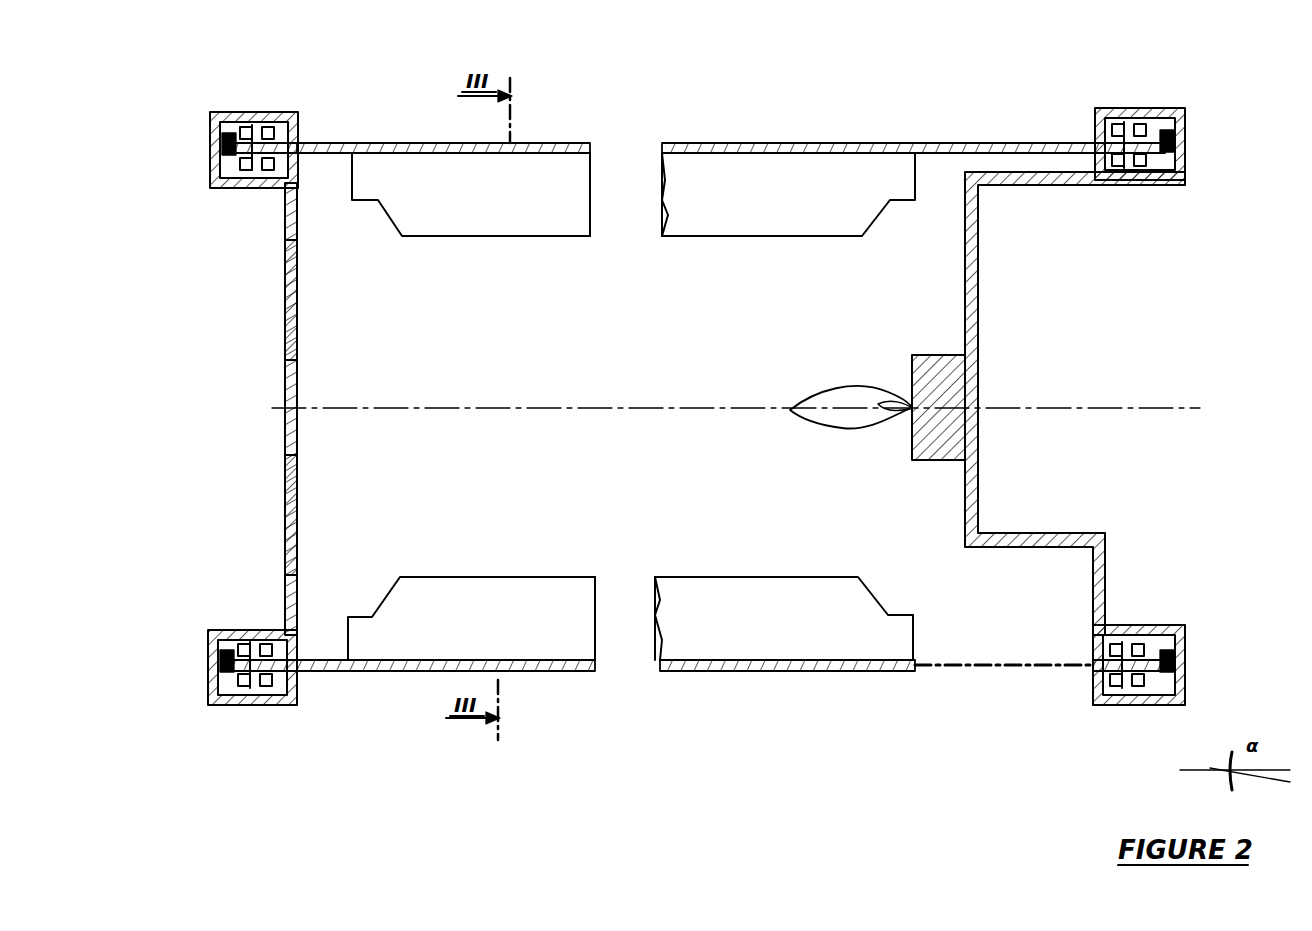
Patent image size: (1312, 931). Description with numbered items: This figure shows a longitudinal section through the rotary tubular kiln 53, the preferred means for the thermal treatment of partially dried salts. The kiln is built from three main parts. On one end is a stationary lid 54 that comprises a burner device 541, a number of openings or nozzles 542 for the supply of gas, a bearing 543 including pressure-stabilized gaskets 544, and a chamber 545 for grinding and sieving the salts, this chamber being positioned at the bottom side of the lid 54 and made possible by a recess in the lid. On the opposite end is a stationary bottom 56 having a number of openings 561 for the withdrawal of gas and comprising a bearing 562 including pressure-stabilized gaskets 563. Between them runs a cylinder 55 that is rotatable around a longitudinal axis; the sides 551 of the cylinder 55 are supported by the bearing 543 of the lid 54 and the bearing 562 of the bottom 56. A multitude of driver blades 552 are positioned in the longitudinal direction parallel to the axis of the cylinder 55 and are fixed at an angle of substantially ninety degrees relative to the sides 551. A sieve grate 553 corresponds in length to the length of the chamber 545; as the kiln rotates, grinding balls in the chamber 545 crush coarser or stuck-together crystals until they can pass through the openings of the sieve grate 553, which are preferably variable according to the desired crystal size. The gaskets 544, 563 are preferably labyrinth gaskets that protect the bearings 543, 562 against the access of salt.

The rotary tubular kiln 53 is at (405, 695).
The stationary lid 54 is at (1090, 403).
The burner device 541 is at (960, 396).
The openings or nozzles for the supply of gas 542 is at (972, 290).
The bearing 543 is at (1178, 116).
The pressure-stabilized gaskets 544 is at (1104, 130).
The chamber for grinding and sieving 545 is at (1004, 604).
The cylinder 55 is at (700, 143).
The sides of the cylinder 551 is at (832, 143).
The driver blades 552 is at (684, 218).
The sieve grate 553 is at (1022, 672).
The stationary bottom 56 is at (262, 376).
The openings for the withdrawal of gas 561 is at (285, 300).
The bearing 562 is at (215, 137).
The gaskets 563 is at (280, 128).